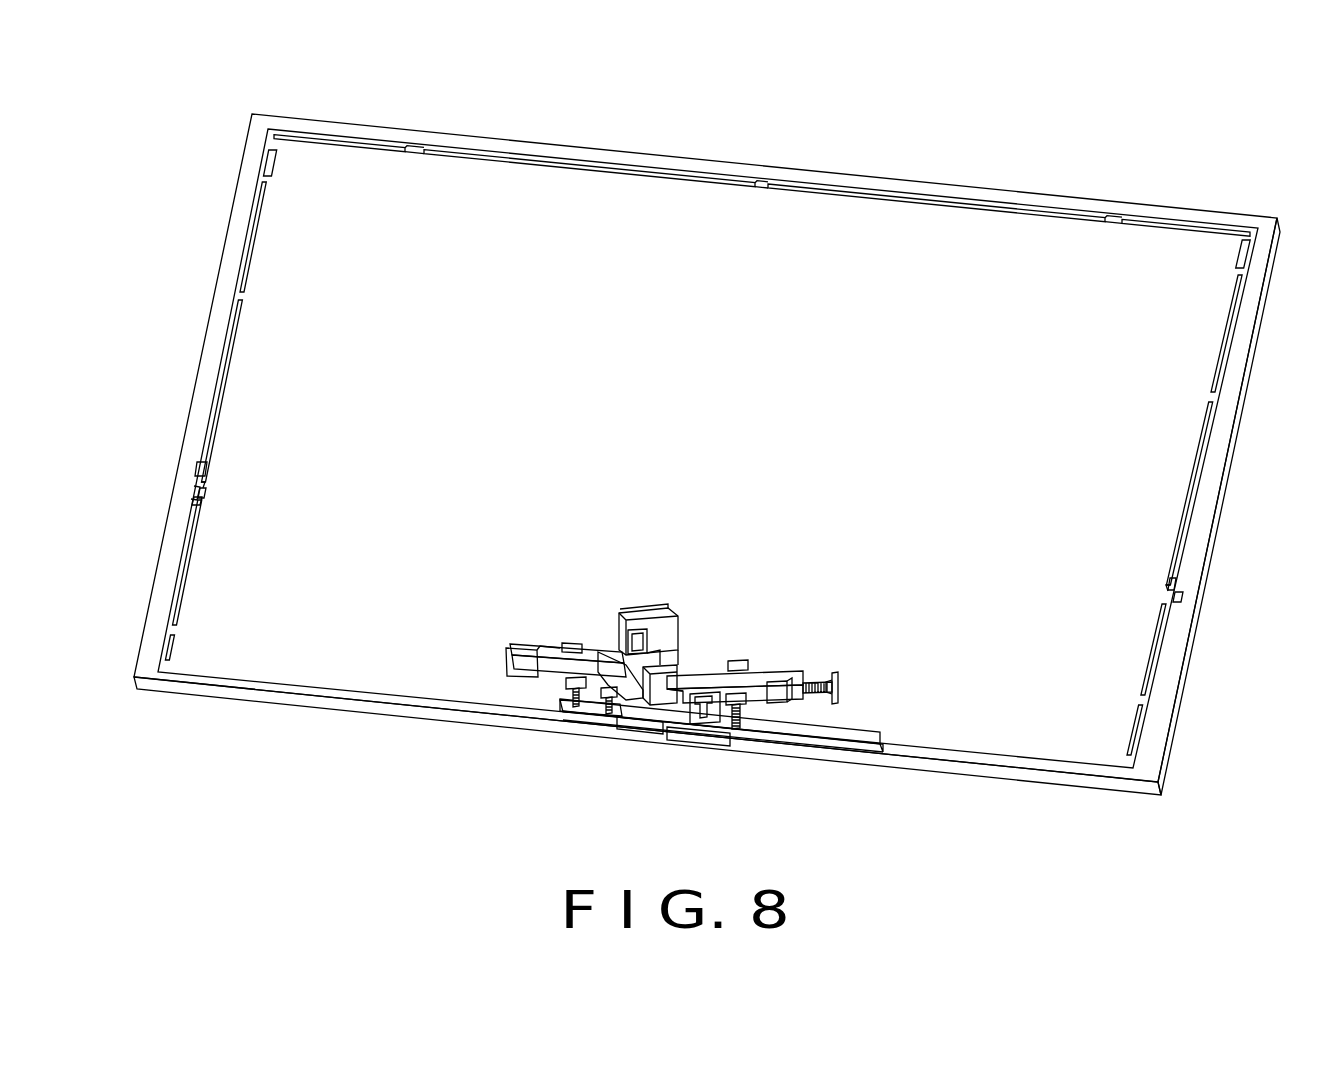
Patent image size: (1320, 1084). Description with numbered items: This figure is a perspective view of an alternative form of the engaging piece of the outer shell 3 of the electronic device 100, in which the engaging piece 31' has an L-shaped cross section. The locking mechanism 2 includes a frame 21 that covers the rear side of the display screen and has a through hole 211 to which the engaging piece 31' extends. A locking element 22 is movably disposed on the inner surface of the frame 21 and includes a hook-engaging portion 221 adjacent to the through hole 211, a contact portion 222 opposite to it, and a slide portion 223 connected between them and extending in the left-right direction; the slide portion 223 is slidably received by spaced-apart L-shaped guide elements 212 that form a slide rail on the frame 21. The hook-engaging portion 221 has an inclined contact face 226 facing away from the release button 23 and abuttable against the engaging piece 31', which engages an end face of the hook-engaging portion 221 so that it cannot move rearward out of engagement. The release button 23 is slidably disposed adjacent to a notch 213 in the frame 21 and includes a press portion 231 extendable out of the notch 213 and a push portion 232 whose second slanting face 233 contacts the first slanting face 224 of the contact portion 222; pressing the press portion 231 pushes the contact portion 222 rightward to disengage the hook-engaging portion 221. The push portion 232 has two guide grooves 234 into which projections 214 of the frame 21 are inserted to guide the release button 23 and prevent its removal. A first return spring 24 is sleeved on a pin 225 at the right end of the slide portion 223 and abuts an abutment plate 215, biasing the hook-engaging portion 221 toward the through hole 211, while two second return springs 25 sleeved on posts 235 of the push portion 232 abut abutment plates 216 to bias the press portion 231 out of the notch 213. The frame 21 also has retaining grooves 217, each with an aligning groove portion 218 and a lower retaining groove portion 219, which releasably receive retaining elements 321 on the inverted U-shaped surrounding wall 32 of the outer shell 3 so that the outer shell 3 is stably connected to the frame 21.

The electronic device 100 is at (962, 150).
The outer shell 3 is at (757, 152).
The surrounding wall 32 is at (820, 182).
The retaining element 321 is at (204, 498).
The locking mechanism 2 is at (614, 744).
The frame 21 is at (372, 723).
The locking element 22 is at (682, 617).
The release button 23 is at (633, 737).
The first return spring 24 is at (812, 683).
The second return spring 25 is at (738, 721).
The engaging piece 31' is at (651, 592).
The through hole 211 is at (627, 607).
The guide element 212 is at (520, 660).
The notch 213 is at (690, 752).
The projection 214 is at (617, 708).
The abutment plate 215 is at (840, 683).
The abutment plate 216 is at (739, 709).
The retaining groove 217 is at (207, 491).
The aligning groove portion 218 is at (204, 472).
The retaining groove portion 219 is at (189, 504).
The hook-engaging portion 221 is at (657, 618).
The contact portion 222 is at (660, 690).
The slide portion 223 is at (755, 676).
The first slanting face 224 is at (602, 650).
The pin 225 is at (826, 686).
The inclined contact face 226 is at (653, 617).
The press portion 231 is at (652, 727).
The push portion 232 is at (590, 666).
The second slanting face 233 is at (637, 688).
The guide groove 234 is at (574, 702).
The post 235 is at (748, 699).